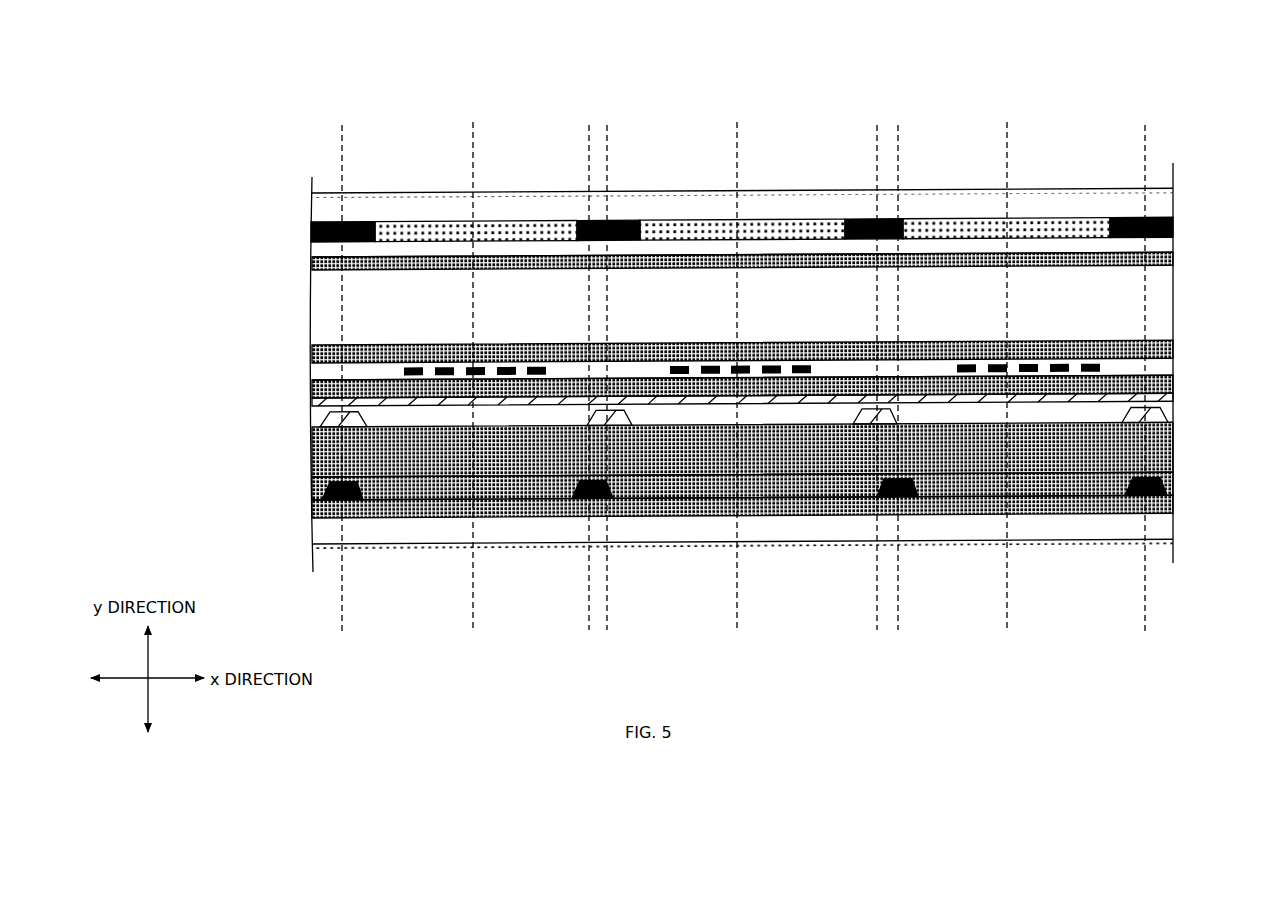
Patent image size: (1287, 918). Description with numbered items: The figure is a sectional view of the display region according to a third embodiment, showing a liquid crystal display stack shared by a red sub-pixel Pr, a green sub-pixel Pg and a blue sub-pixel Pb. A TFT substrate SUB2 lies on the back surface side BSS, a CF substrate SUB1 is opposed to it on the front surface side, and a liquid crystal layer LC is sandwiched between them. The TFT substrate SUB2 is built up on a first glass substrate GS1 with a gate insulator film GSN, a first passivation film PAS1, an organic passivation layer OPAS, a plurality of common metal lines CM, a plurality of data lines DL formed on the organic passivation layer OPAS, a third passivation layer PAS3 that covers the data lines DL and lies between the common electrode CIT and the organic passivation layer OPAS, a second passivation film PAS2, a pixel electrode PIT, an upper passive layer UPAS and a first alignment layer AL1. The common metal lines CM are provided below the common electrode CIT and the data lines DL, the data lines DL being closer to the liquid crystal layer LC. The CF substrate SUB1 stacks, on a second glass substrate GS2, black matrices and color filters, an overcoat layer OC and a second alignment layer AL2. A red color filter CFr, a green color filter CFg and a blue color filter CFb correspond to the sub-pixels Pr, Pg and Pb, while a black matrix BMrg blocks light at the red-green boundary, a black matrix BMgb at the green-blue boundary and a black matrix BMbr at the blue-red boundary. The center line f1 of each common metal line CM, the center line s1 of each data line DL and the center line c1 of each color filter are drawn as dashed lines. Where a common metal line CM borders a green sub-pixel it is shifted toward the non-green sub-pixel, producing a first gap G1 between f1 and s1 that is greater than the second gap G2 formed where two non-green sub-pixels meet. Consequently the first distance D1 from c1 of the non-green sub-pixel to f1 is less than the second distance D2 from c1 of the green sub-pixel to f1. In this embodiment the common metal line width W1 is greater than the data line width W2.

The red sub-pixel Pr is at (603, 57).
The green sub-pixel Pg is at (870, 57).
The blue sub-pixel Pb is at (1145, 57).
The first gap G1 is at (901, 134).
The second gap G2 is at (1148, 134).
The center line of color filter c1 is at (741, 366).
The black matrix BMbr is at (380, 222).
The black matrix BMrg is at (634, 221).
The black matrix BMgb is at (843, 220).
The red color filter CFr is at (488, 226).
The green color filter CFg is at (757, 227).
The blue color filter CFb is at (988, 226).
The back surface side BSS is at (1162, 171).
The second glass substrate GS2 is at (1165, 210).
The overcoat layer OC is at (1160, 246).
The second alignment layer AL2 is at (1163, 264).
The first alignment layer AL1 is at (1163, 341).
The upper passive layer UPAS is at (1163, 366).
The second passivation film PAS2 is at (1170, 386).
The third passivation layer PAS3 is at (1170, 402).
The organic passivation layer OPAS is at (1170, 440).
The first passivation film PAS1 is at (1170, 480).
The gate insulator film GSN is at (1170, 503).
The first glass substrate GS1 is at (1170, 525).
The CF substrate SUB1 is at (289, 193).
The liquid crystal layer LC is at (289, 270).
The TFT substrate SUB2 is at (289, 345).
The pixel electrode PIT is at (449, 368).
The common electrode CIT is at (546, 397).
The data line DL is at (616, 410).
The common metal line CM is at (585, 498).
The common metal line width W1 is at (877, 527).
The data line width W2 is at (855, 428).
The first distance D1 is at (589, 587).
The second distance D2 is at (737, 607).
The center line of common metal line f1 is at (342, 609).
The center line of data line s1 is at (344, 628).